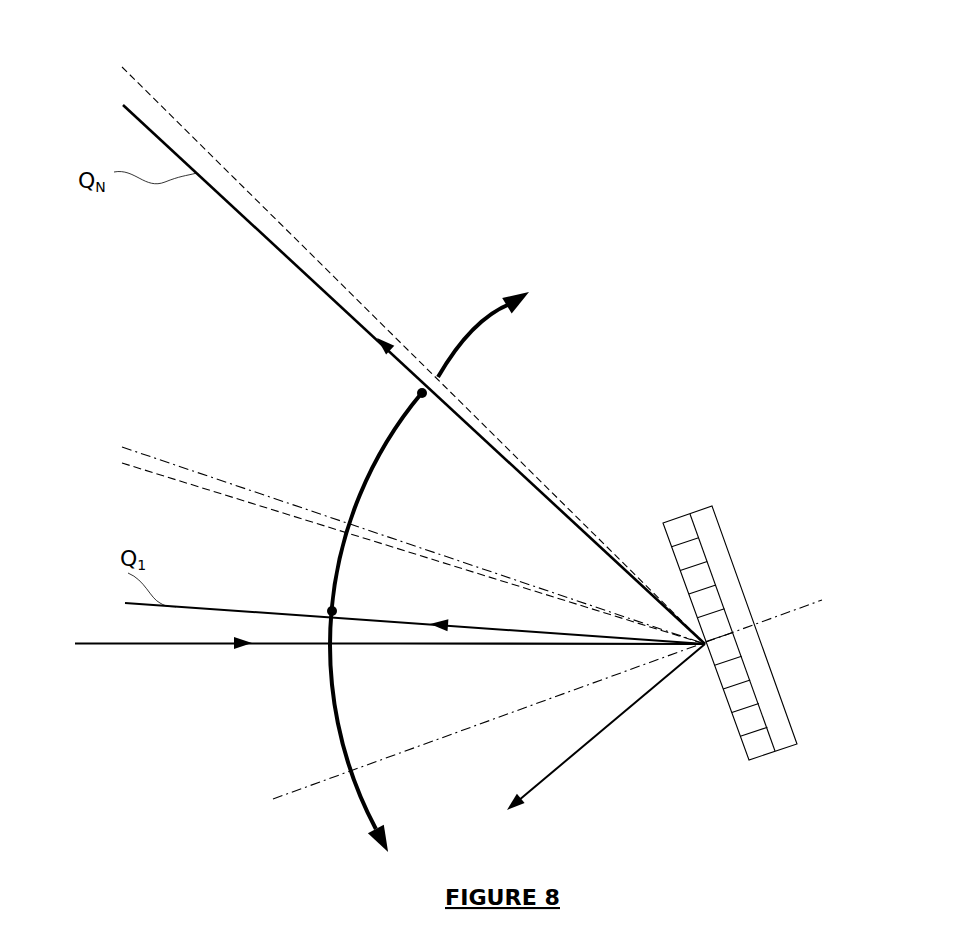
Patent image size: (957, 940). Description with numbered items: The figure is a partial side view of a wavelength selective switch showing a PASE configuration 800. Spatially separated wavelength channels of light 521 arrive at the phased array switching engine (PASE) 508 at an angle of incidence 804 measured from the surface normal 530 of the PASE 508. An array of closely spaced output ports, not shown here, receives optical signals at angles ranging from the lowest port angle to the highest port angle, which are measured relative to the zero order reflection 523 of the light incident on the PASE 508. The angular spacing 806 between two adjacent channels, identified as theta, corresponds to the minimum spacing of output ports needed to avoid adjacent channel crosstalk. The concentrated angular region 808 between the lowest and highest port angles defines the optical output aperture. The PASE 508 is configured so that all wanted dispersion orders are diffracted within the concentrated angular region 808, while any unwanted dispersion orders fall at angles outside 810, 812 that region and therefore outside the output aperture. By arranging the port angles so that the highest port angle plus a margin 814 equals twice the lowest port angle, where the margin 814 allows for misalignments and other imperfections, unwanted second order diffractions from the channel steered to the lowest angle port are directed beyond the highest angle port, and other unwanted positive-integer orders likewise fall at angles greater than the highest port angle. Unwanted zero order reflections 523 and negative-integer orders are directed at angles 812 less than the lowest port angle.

The PASE configuration 800 is at (476, 80).
The phased array switching engine (PASE) 508 is at (780, 757).
The spatially separated wavelength channels of light 521 is at (110, 640).
The zero order reflection 523 is at (562, 770).
The surface normal 530 is at (296, 793).
The angle of incidence 804 is at (563, 648).
The angular spacing 806 is at (205, 489).
The concentrated angular region 808 is at (356, 473).
The angles outside the concentrated angular region 810 is at (468, 326).
The angles outside the concentrated angular region 812 is at (341, 734).
The margin 814 is at (307, 257).